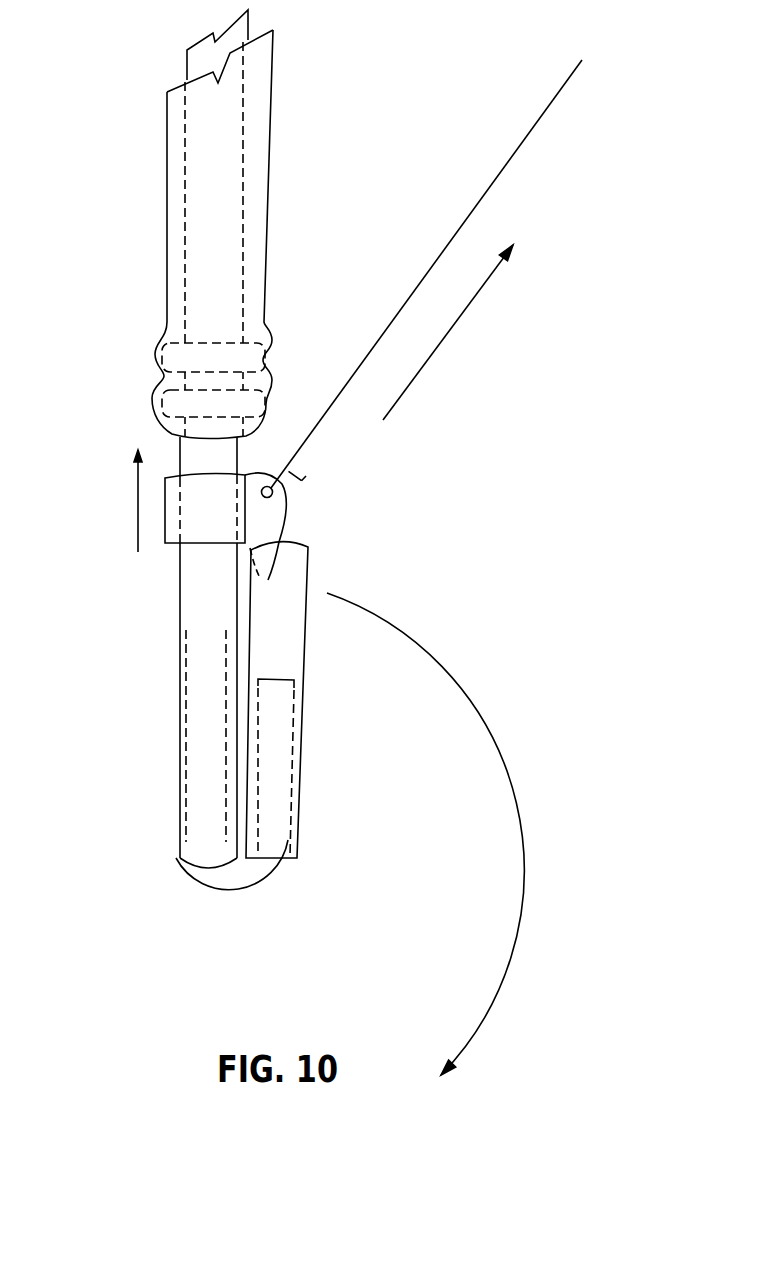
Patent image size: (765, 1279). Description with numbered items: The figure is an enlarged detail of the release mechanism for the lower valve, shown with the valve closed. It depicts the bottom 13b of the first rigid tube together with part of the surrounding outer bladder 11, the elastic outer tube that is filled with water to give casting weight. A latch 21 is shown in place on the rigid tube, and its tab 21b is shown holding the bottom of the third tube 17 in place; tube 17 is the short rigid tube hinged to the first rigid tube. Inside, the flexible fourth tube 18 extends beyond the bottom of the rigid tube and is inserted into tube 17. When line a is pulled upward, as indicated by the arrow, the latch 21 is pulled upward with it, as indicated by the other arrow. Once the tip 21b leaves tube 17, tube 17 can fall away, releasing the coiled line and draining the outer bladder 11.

The outer tube 11 is at (168, 188).
The bottom of the first rigid tube 13b is at (175, 455).
The latch 21 is at (167, 532).
The tab 21b is at (263, 522).
The third tube 17 is at (304, 632).
The fourth tube 18 is at (280, 749).
The line a is at (442, 263).